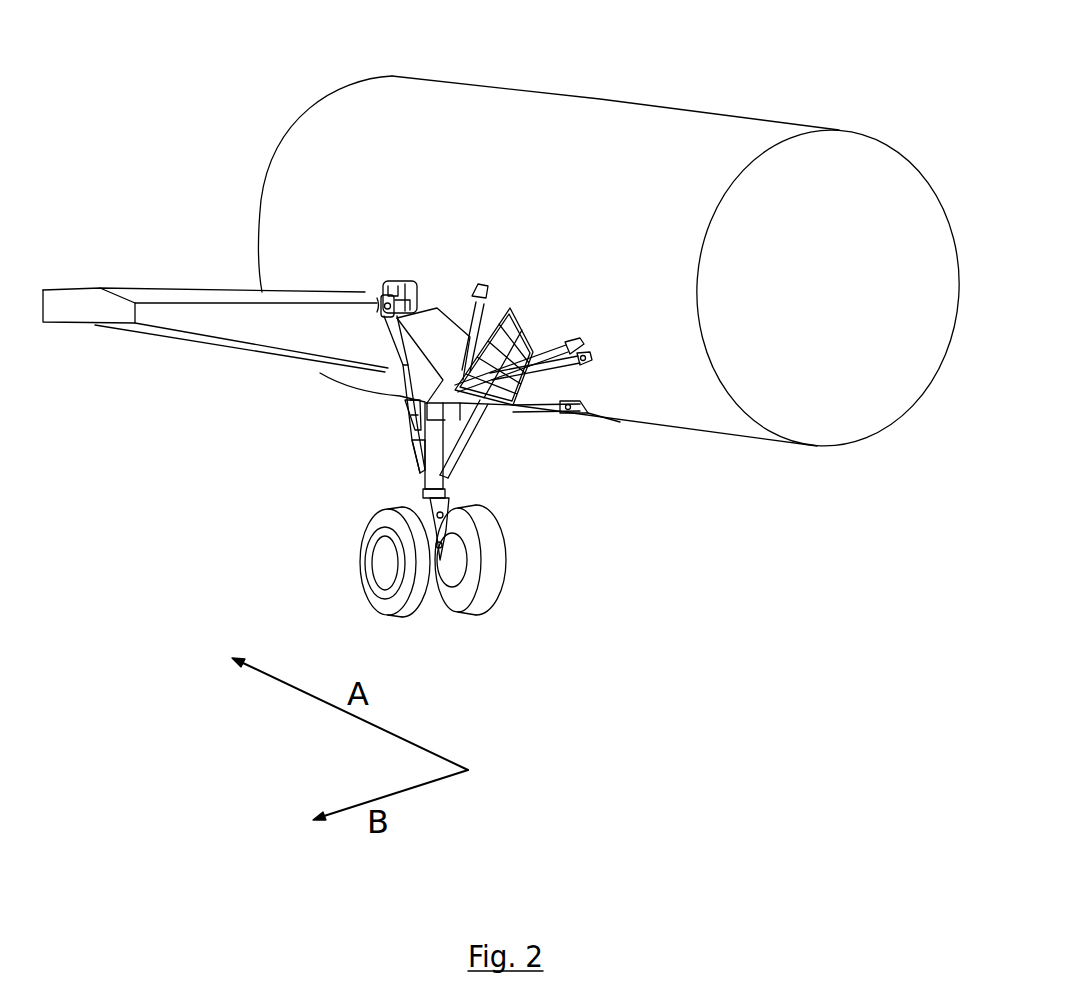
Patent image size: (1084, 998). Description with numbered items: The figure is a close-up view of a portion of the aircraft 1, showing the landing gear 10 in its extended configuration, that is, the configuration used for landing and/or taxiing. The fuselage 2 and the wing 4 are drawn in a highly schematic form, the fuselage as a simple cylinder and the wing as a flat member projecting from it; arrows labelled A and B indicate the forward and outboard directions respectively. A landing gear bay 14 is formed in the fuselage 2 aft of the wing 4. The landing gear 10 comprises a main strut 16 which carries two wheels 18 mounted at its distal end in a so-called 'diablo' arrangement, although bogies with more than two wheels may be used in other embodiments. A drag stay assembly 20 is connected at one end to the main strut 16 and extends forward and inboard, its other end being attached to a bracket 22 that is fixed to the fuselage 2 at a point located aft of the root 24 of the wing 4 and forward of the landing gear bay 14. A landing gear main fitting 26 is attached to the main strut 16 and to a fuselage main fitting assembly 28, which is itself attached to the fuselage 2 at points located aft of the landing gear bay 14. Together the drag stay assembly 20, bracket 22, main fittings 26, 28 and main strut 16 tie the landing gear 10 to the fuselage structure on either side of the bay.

The aircraft 1 is at (246, 75).
The fuselage 2 is at (589, 187).
The wing 4 is at (323, 347).
The landing gear 10 is at (486, 641).
The landing gear bay 14 is at (440, 357).
The main strut 16 is at (435, 460).
The wheels 18 is at (478, 583).
The drag stay assembly 20 is at (368, 416).
The bracket 22 is at (402, 307).
The root of the wing 24 is at (377, 300).
The landing gear main fitting 26 is at (470, 427).
The fuselage main fitting assembly 28 is at (542, 430).